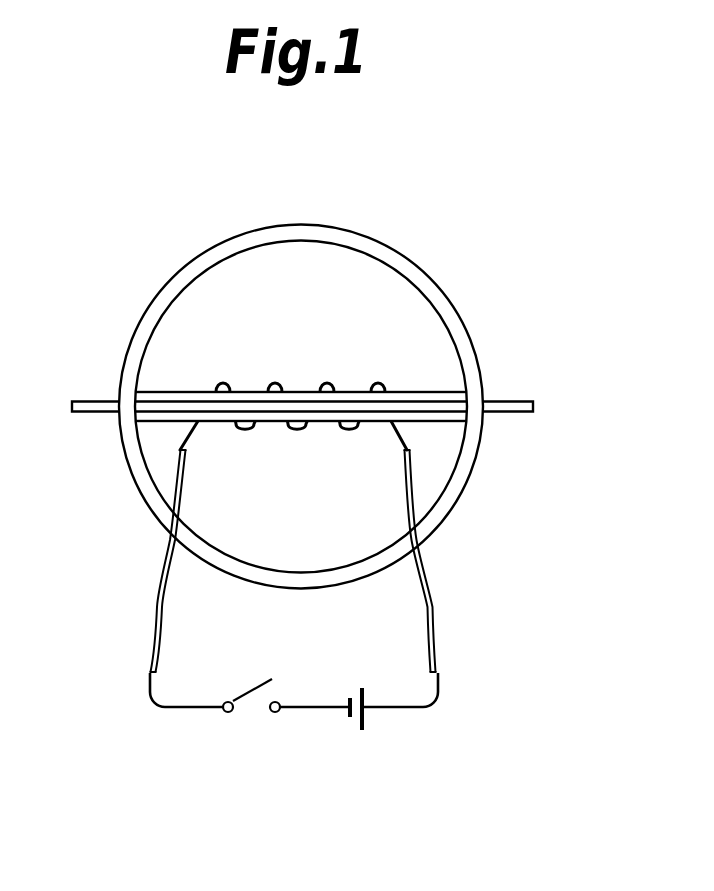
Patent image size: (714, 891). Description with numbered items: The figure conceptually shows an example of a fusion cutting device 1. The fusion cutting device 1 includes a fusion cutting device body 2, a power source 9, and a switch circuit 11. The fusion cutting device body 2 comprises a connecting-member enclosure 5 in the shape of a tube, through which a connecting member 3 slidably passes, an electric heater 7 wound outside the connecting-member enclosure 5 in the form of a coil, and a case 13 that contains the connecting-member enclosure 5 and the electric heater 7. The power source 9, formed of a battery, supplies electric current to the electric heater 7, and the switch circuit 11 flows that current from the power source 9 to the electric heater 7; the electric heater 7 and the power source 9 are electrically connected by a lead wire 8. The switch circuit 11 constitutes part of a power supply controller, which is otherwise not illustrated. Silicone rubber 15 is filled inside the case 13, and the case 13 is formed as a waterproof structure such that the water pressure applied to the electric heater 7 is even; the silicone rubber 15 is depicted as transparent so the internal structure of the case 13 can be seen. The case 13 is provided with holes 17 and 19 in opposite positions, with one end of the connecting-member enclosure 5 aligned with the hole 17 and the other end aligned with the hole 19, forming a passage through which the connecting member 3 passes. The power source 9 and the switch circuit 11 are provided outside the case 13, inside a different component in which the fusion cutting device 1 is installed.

The fusion cutting device 1 is at (482, 230).
The fusion cutting device body 2 is at (327, 220).
The connecting member 3 is at (529, 401).
The connecting-member enclosure 5 is at (152, 390).
The electric heater 7 is at (378, 382).
The lead wire 8 is at (153, 610).
The power source 9 is at (365, 722).
The switch circuit 11 is at (248, 707).
The case 13 is at (470, 489).
The silicone rubber 15 is at (232, 320).
The hole 17 is at (118, 417).
The hole 19 is at (485, 393).